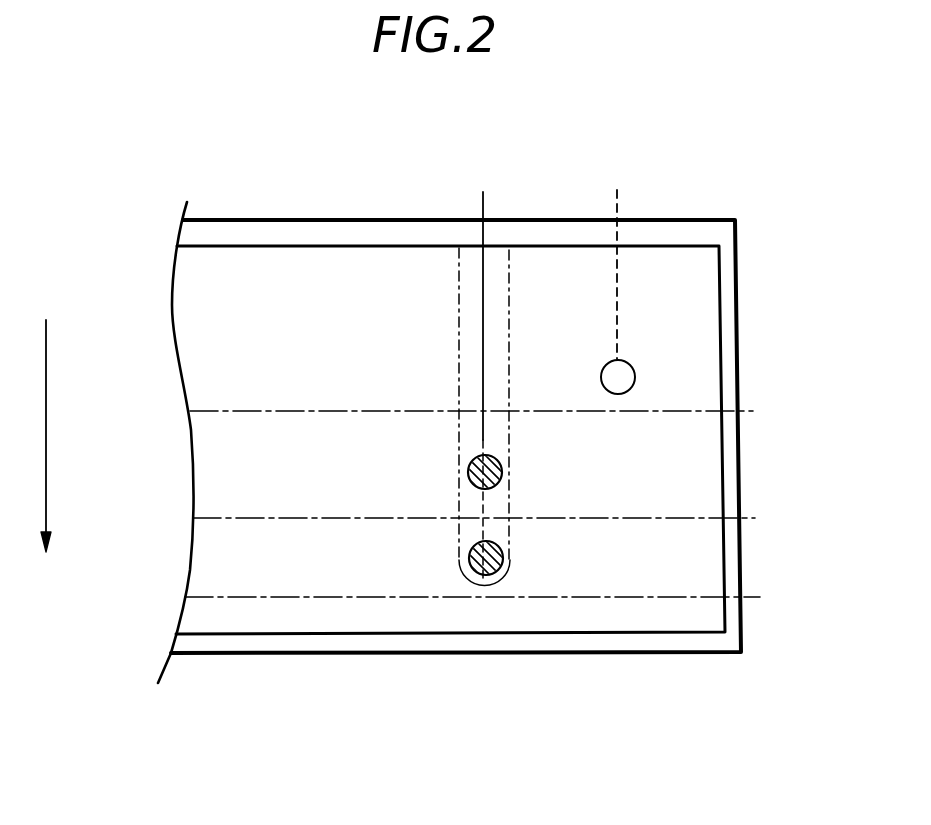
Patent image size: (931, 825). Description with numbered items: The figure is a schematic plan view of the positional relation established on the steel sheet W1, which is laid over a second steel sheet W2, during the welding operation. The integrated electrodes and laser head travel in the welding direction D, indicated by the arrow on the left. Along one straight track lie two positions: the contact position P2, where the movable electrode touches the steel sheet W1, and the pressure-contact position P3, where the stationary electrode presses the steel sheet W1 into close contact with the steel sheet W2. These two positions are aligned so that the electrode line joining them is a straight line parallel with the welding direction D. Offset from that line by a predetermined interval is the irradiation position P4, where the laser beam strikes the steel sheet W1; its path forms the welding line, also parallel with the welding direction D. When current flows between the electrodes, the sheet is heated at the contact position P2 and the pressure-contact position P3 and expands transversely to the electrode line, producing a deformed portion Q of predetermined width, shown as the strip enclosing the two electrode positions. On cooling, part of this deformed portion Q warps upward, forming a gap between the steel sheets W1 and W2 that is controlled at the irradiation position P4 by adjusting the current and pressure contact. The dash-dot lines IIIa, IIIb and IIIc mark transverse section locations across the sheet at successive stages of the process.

The steel sheet W1 is at (188, 302).
The steel sheet W2 is at (300, 233).
The welding direction D is at (35, 436).
The deformed portion Q is at (497, 388).
The contact position P2 is at (470, 570).
The pressure-contact position P3 is at (470, 483).
The irradiation position P4 is at (628, 372).
The section line IIIa is at (760, 597).
The section line IIIb is at (755, 518).
The section line IIIc is at (753, 411).